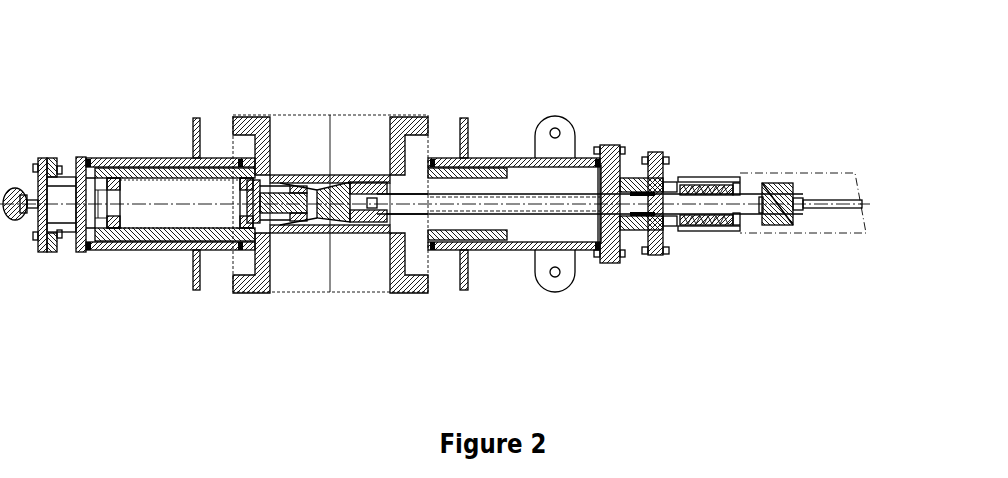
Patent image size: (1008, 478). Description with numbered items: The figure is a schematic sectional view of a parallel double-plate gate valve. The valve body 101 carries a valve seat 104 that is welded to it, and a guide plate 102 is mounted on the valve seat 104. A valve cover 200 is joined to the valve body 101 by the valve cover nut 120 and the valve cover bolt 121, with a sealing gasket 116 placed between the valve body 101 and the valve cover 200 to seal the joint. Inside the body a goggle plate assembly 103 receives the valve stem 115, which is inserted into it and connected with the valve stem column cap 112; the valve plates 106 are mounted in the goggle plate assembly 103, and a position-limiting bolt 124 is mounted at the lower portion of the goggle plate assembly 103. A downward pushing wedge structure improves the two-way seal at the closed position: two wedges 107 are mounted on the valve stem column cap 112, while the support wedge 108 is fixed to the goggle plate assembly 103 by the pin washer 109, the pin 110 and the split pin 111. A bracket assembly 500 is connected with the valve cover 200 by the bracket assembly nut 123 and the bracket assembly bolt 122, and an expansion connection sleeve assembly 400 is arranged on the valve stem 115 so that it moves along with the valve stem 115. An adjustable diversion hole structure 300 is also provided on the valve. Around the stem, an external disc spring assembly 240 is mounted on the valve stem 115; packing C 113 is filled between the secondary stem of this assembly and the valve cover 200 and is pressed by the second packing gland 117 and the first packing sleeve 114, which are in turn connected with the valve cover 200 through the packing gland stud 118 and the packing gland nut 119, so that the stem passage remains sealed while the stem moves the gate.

The valve body 101 is at (268, 150).
The guide plate 102 is at (213, 160).
The goggle plate assembly 103 is at (255, 163).
The valve seat 104 is at (398, 150).
The valve plate 106 is at (345, 185).
The wedge 107 is at (331, 222).
The support wedge 108 is at (318, 190).
The pin washer 109 is at (308, 185).
The pin 110 is at (303, 227).
The split pin 111 is at (305, 230).
The valve stem column cap 112 is at (365, 228).
The packing C 113 is at (633, 177).
The first packing sleeve 114 is at (680, 178).
The valve stem 115 is at (578, 197).
The sealing gasket 116 is at (600, 145).
The second packing gland 117 is at (665, 252).
The packing gland stud 118 is at (650, 258).
The packing gland nut 119 is at (668, 232).
The valve cover nut 120 is at (602, 255).
The valve cover bolt 121 is at (612, 262).
The bracket assembly bolt 122 is at (646, 160).
The bracket assembly nut 123 is at (667, 170).
The position-limiting bolt 124 is at (91, 252).
The valve cover 200 is at (613, 150).
The external disc spring assembly 240 is at (729, 232).
The adjustable diversion hole structure 300 is at (267, 227).
The expansion connection sleeve assembly 400 is at (750, 182).
The bracket assembly 500 is at (815, 220).